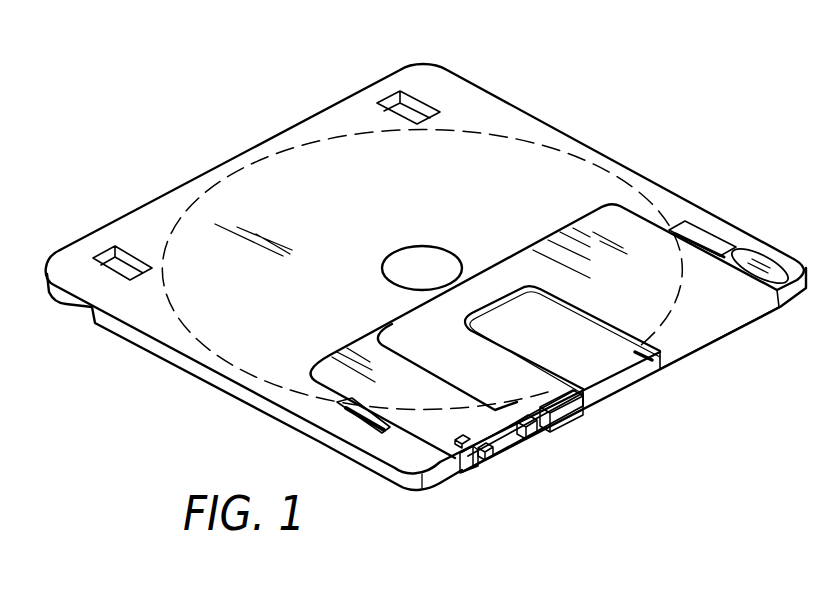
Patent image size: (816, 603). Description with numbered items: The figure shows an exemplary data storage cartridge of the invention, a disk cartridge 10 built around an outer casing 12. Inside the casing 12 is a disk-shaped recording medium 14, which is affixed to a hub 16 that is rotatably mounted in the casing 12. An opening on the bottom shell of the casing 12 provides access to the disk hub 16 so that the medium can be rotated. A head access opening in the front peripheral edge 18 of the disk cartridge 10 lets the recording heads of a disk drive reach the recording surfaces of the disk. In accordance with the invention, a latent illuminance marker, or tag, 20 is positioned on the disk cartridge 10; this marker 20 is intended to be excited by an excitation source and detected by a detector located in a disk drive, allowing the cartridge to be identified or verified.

The disk cartridge 10 is at (168, 431).
The outer casing 12 is at (522, 106).
The disk-shaped recording medium 14 is at (618, 356).
The hub 16 is at (416, 268).
The front peripheral edge 18 is at (588, 389).
The latent illuminance marker 20 is at (768, 268).